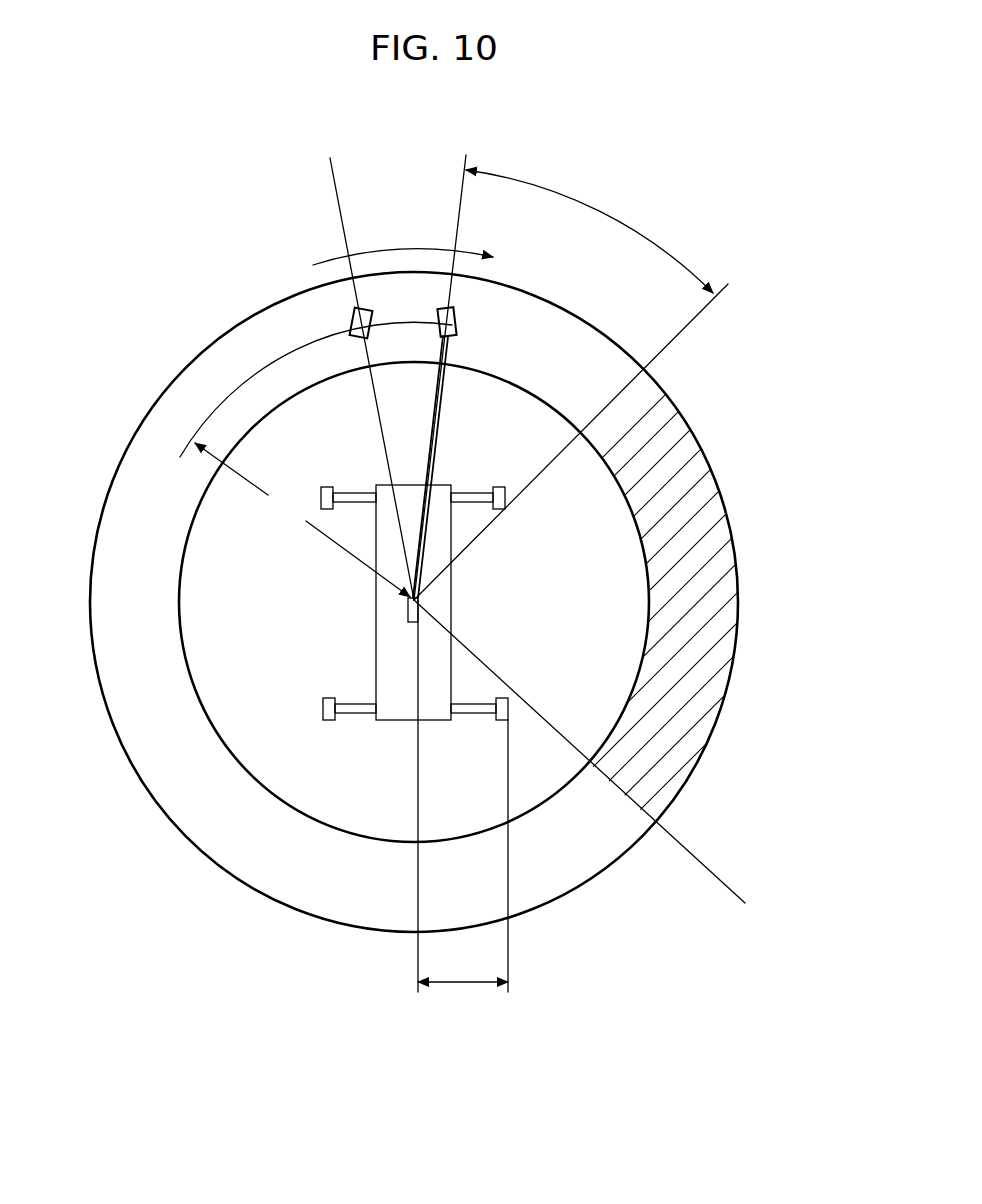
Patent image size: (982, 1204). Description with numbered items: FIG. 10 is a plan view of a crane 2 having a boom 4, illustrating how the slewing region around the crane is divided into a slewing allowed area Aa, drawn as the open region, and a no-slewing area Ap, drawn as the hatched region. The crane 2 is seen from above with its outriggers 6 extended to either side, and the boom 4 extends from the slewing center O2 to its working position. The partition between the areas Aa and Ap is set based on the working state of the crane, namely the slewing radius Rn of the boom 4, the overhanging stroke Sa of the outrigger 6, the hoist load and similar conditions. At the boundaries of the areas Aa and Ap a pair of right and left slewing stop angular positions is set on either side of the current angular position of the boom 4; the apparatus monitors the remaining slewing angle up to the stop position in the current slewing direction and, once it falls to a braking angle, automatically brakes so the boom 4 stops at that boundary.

The crane 2 is at (392, 662).
The boom 4 is at (428, 430).
The outrigger 6 is at (350, 503).
The rotation center of vehicle O2 is at (410, 605).
The slewing radius Rn is at (316, 459).
The slewing allowed area Aa is at (153, 446).
The no-slewing area Ap is at (722, 598).
The outrigger hanging stroke Sa is at (463, 808).